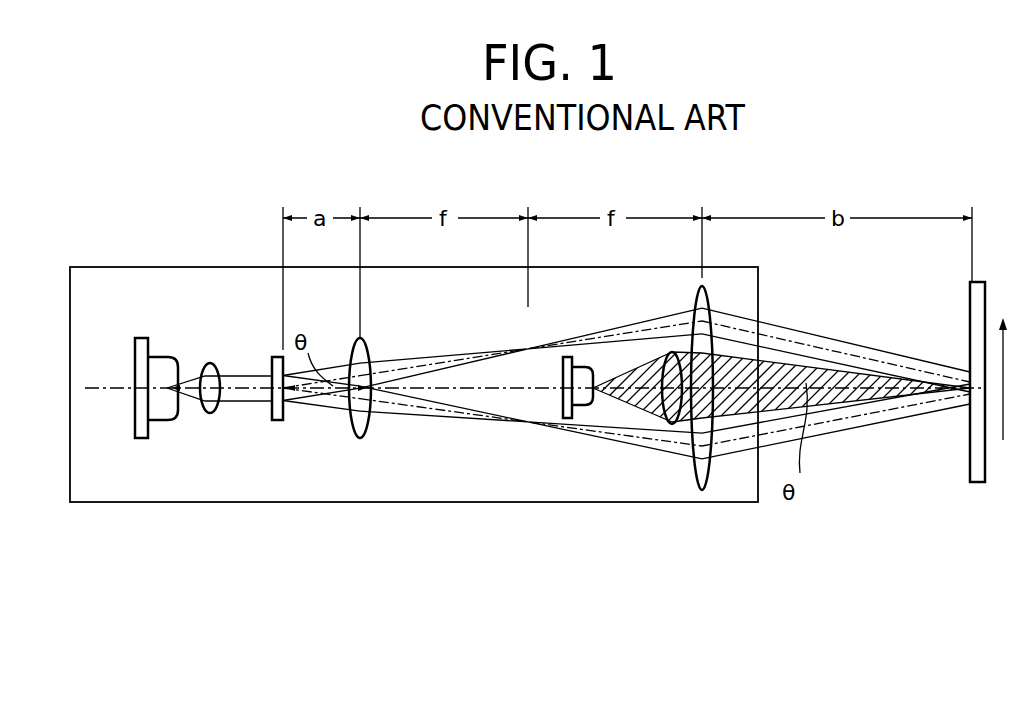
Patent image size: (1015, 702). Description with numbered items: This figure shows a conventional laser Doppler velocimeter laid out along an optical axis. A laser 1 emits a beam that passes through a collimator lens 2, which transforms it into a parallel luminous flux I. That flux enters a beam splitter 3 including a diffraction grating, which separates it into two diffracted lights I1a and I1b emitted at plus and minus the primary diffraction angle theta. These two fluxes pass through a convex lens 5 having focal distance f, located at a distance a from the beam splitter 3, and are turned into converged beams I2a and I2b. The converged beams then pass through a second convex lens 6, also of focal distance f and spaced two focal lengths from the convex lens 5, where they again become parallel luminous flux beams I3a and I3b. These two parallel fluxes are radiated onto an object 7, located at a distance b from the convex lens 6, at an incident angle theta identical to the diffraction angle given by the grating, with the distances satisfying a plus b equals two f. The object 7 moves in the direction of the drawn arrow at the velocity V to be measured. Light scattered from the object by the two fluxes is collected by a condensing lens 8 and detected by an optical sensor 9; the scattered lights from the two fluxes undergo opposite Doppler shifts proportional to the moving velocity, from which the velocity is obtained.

The laser 1 is at (160, 418).
The collimator lens 2 is at (210, 414).
The beam splitter 3 is at (276, 421).
The convex lens 5 is at (362, 439).
The convex lens 6 is at (700, 491).
The object 7 is at (968, 468).
The condensing lens 8 is at (669, 424).
The optical sensor 9 is at (585, 400).
The parallel luminous flux I is at (240, 377).
The diffracted light I1a is at (328, 378).
The diffracted light I1b is at (327, 413).
The converged beam I2a is at (455, 352).
The converged beam I2b is at (435, 415).
The parallel luminous flux beam I3a is at (848, 345).
The parallel luminous flux beam I3b is at (850, 425).